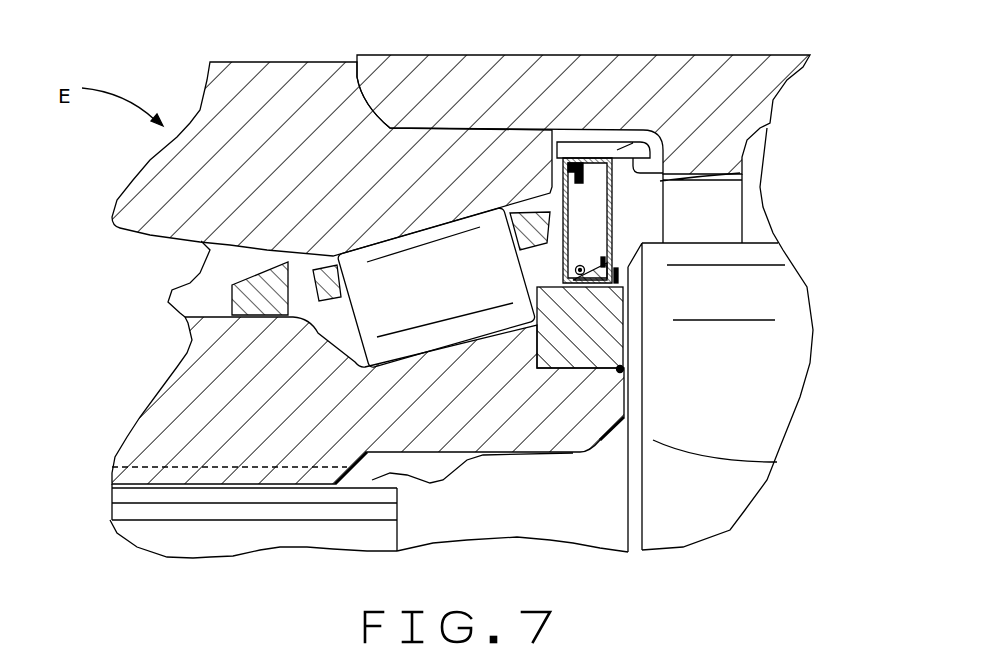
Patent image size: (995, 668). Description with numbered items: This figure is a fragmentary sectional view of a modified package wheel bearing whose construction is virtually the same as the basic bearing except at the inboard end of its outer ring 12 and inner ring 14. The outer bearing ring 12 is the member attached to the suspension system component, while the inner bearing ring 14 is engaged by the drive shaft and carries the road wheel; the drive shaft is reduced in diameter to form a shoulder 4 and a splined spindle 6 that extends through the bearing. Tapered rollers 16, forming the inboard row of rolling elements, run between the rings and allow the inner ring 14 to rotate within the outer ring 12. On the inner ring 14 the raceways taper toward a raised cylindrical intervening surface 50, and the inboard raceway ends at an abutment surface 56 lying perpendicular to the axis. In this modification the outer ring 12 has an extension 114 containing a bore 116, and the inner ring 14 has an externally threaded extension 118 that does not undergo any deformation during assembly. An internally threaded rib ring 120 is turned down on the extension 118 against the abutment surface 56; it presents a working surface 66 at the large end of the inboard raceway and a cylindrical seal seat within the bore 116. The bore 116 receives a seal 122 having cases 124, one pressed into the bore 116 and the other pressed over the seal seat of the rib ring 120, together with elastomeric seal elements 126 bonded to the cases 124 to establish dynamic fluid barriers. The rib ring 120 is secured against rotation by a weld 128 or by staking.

The shoulder 4 is at (627, 516).
The spindle 6 is at (223, 545).
The outer bearing ring 12 is at (237, 87).
The inner bearing ring 14 is at (168, 405).
The tapered rollers 16 is at (445, 257).
The cylindrical intervening surface 50 is at (193, 283).
The abutment surface 56 is at (538, 358).
The working surface 66 is at (527, 295).
The extension 114 is at (663, 128).
The bore 116 is at (663, 173).
The extension 118 is at (667, 463).
The rib ring 120 is at (590, 305).
The seal 122 is at (660, 262).
The seal case 124 is at (603, 214).
The elastomeric seal elements 126 is at (555, 188).
The weld 128 is at (621, 369).